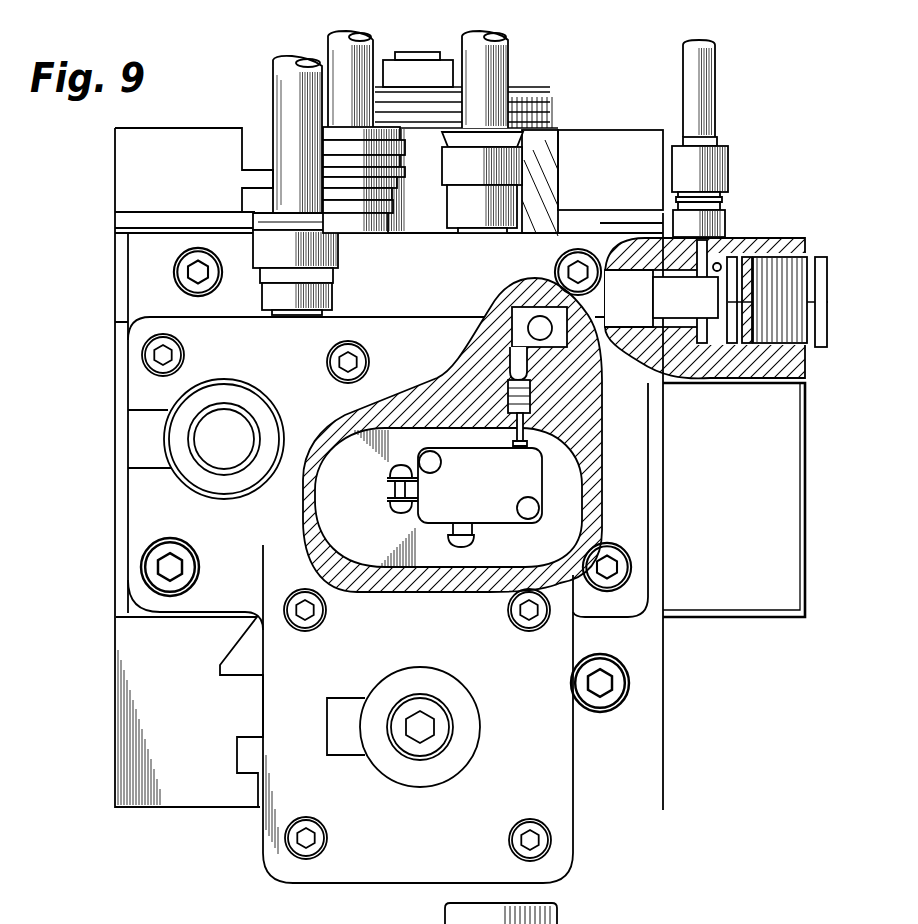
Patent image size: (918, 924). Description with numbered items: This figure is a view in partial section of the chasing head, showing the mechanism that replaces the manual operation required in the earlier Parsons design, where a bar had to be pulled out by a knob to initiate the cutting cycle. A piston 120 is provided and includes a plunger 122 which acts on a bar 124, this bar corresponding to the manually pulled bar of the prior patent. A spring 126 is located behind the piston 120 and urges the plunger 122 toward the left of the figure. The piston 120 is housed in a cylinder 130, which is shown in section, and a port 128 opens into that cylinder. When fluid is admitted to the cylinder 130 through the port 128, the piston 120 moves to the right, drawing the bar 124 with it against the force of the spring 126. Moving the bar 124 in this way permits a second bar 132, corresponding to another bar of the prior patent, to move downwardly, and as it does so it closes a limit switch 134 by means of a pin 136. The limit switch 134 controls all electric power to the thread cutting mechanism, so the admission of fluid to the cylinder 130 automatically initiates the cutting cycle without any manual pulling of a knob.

The piston 120 is at (743, 238).
The plunger 122 is at (698, 309).
The bar 124 is at (607, 330).
The spring 126 is at (813, 258).
The port 128 is at (720, 238).
The cylinder 130 is at (713, 345).
The bar 132 is at (520, 306).
The limit switch 134 is at (500, 496).
The pin 136 is at (528, 368).